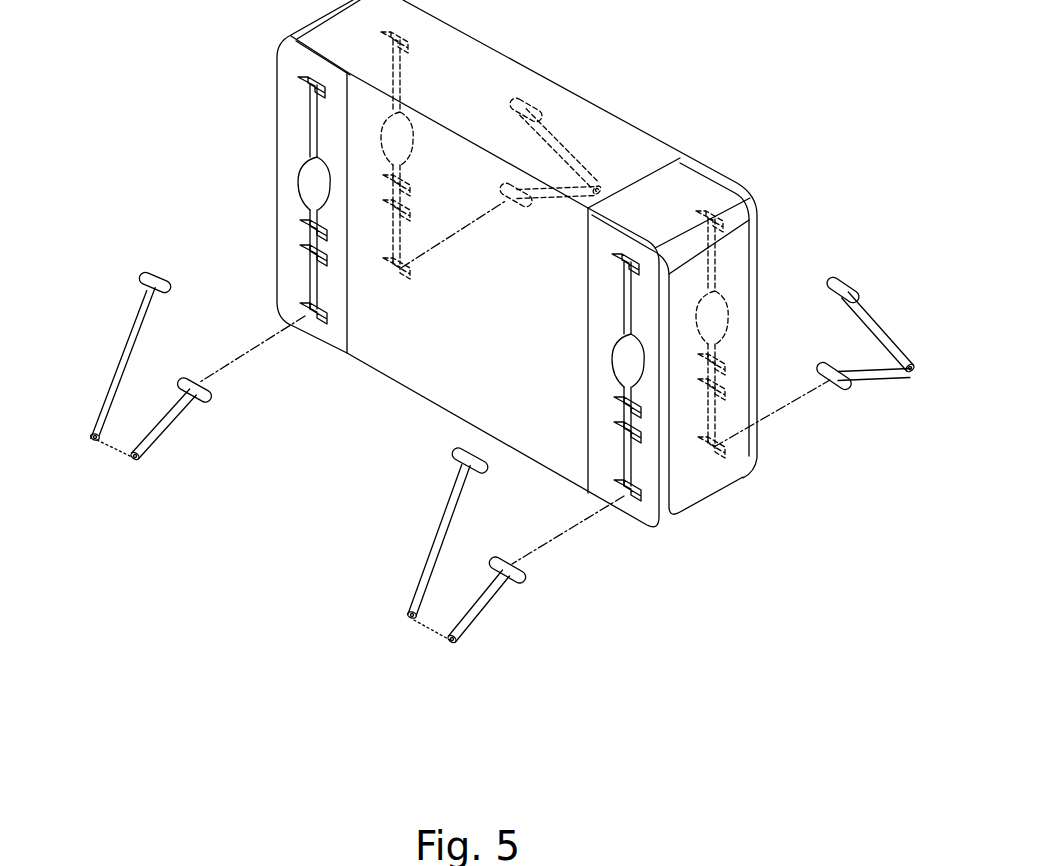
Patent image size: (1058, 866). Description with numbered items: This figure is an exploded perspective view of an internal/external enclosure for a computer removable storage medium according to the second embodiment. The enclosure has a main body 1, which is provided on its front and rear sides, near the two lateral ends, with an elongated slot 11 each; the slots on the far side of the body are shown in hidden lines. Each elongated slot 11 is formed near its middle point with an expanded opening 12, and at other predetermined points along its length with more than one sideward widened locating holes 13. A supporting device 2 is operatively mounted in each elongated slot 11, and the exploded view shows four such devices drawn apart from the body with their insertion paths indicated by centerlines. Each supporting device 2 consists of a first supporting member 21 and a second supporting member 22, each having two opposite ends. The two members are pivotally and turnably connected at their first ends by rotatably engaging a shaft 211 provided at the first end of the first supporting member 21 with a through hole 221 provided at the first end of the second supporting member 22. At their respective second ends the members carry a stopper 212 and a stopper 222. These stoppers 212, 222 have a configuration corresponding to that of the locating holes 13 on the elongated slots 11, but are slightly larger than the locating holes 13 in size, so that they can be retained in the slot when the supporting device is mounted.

The main body 1 is at (468, 263).
The supporting device 2 is at (482, 327).
The elongated slot 11 is at (317, 127).
The expanded opening 12 is at (310, 183).
The sideward widened locating hole 13 is at (303, 82).
The first supporting member 21 is at (111, 364).
The shaft 211 is at (96, 442).
The stopper 212 is at (152, 276).
The second supporting member 22 is at (224, 450).
The through hole 221 is at (132, 460).
The stopper 222 is at (213, 392).